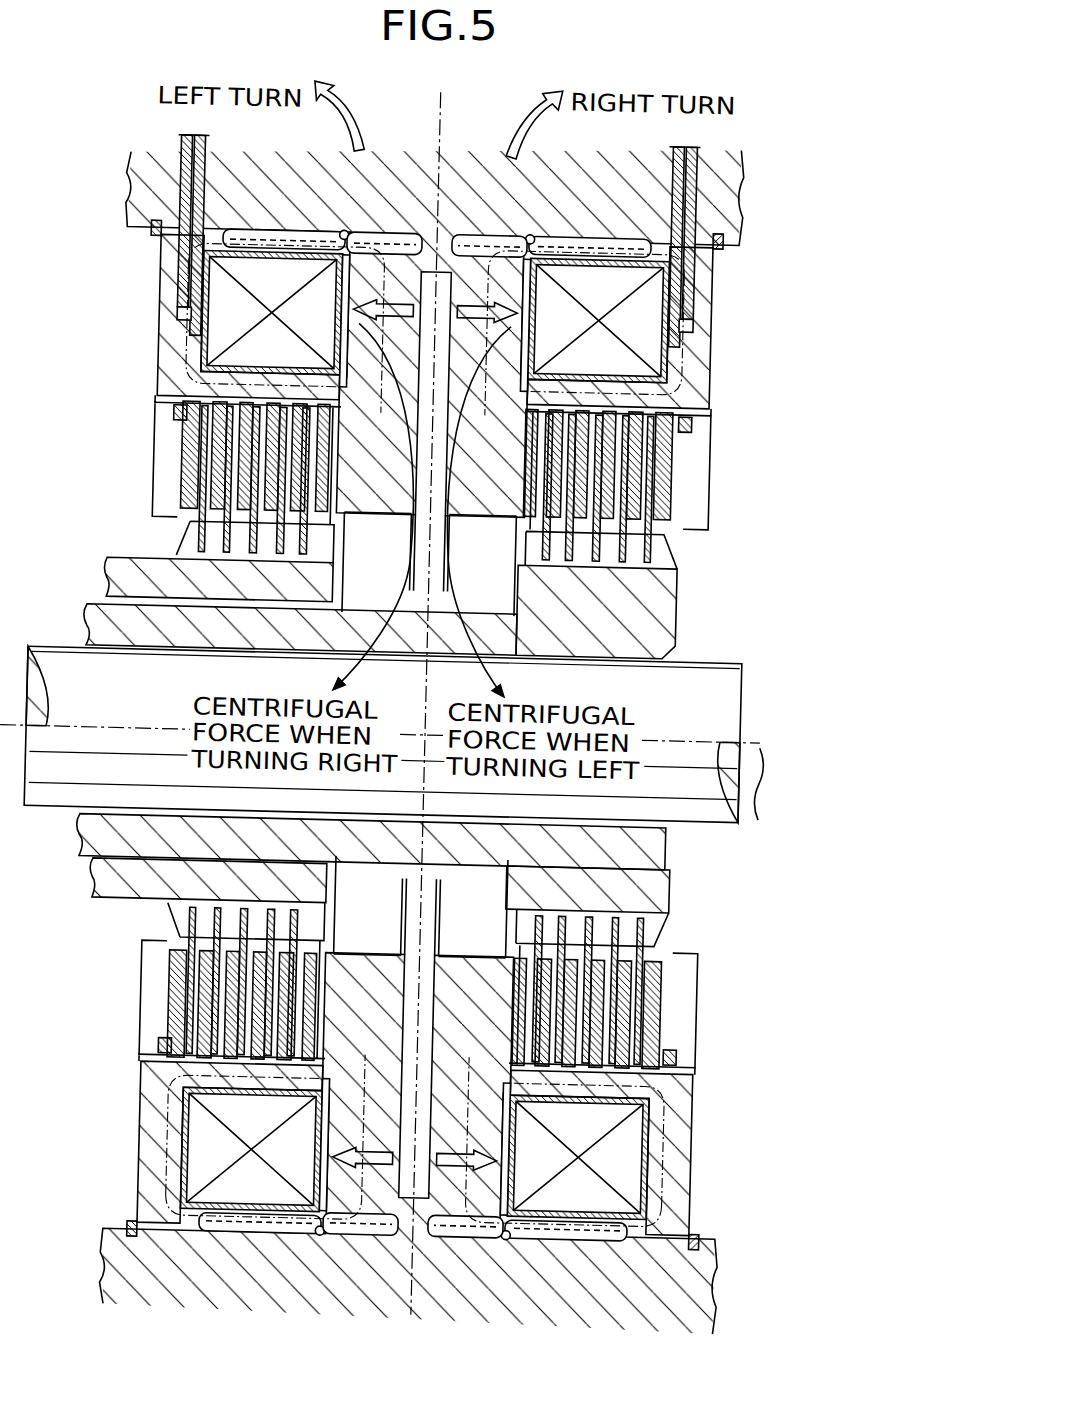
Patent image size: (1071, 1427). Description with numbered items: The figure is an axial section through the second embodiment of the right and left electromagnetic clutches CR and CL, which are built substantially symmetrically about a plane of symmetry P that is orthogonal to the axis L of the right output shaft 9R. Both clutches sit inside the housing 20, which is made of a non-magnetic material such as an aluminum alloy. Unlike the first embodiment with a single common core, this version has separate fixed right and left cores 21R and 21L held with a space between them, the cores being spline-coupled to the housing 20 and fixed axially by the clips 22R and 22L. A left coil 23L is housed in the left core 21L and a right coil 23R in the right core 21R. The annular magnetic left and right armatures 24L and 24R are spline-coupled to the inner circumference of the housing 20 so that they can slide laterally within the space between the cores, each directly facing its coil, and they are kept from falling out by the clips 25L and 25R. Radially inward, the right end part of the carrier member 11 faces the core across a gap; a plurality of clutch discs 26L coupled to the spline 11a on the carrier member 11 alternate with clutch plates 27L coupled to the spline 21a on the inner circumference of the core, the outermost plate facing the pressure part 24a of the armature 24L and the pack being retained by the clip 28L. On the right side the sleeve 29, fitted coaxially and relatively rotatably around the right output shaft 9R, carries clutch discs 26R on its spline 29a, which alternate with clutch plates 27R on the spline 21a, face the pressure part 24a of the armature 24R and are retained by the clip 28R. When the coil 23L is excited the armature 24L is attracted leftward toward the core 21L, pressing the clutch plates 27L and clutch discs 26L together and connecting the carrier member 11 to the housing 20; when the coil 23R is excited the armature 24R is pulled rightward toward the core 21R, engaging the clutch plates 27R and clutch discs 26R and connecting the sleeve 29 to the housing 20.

The right output shaft 9R is at (697, 812).
The carrier member 11 is at (128, 563).
The spline 11a is at (181, 543).
The housing 20 is at (566, 170).
The left core 21L is at (158, 372).
The right core 21R is at (690, 378).
The spline 21a is at (159, 416).
The clip 22L is at (331, 232).
The clip 22R is at (517, 232).
The left coil 23L is at (285, 296).
The right coil 23R is at (609, 300).
The left armature 24L is at (373, 233).
The right armature 24R is at (477, 233).
The pressure part 24a is at (425, 735).
The clip 25L is at (139, 236).
The clip 25R is at (702, 244).
The clutch discs 26L is at (222, 559).
The clutch discs 26R is at (565, 559).
The clutch plates 27L is at (265, 410).
The clutch plates 27R is at (628, 410).
The clip 28L is at (168, 427).
The clip 28R is at (681, 427).
The sleeve 29 is at (676, 590).
The spline 29a is at (664, 553).
The left electromagnetic clutch CL is at (120, 338).
The right electromagnetic clutch CR is at (701, 315).
The plane of symmetry P is at (423, 116).
The axis L is at (384, 786).